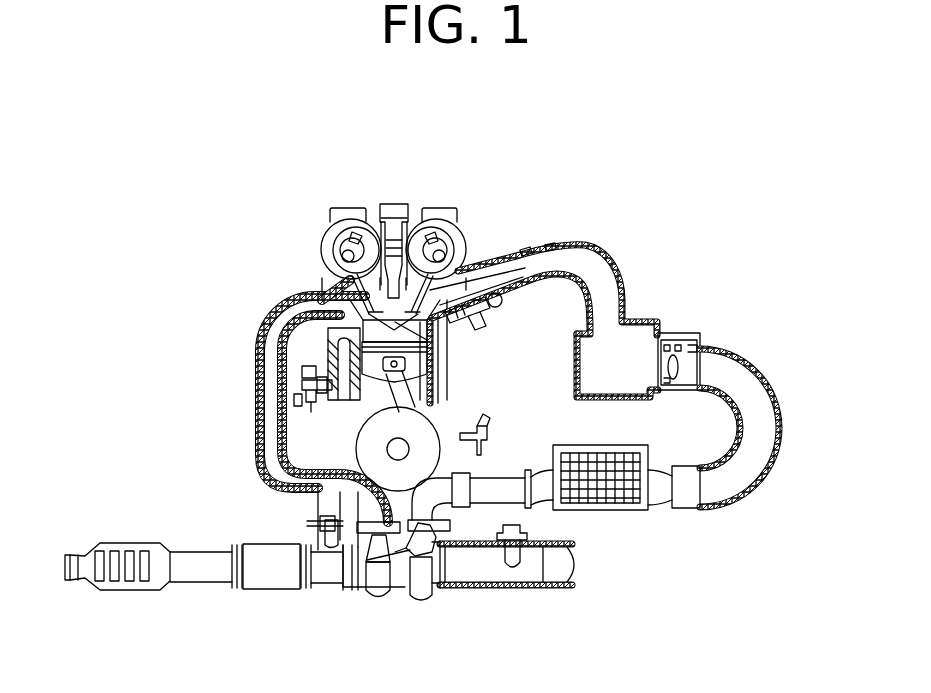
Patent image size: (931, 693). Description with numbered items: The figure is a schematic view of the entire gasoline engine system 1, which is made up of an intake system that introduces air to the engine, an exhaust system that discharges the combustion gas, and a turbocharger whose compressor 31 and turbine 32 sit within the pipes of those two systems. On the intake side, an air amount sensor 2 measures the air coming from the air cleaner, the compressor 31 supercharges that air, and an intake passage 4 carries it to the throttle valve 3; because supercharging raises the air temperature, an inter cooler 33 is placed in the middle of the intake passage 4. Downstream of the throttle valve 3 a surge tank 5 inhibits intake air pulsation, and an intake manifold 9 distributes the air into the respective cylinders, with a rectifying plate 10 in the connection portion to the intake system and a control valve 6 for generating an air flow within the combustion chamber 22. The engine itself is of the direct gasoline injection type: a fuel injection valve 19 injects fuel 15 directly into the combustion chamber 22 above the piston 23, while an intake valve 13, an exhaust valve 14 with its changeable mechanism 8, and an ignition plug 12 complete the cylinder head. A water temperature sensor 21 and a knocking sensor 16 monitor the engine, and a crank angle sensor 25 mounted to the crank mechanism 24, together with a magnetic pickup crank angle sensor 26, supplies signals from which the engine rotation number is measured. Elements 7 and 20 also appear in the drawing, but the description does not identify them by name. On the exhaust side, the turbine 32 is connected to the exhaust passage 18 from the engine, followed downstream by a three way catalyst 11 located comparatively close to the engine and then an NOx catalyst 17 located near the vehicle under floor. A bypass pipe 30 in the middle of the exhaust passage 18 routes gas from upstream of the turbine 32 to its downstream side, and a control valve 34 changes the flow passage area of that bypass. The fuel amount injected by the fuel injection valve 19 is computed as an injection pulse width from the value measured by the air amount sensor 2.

The gasoline engine system 1 is at (221, 212).
The air amount sensor 2 is at (507, 562).
The throttle valve 3 is at (700, 373).
The intake passage 4 is at (497, 495).
The surge tank 5 is at (633, 337).
The control valve 6 is at (550, 285).
The intake camshaft 7 is at (442, 245).
The changeable mechanism for the exhaust valve 8 is at (350, 230).
The intake manifold 9 is at (543, 270).
The rectifying plate 10 is at (497, 274).
The catalyst 11 is at (262, 580).
The ignition plug 12 is at (393, 210).
The intake valve 13 is at (449, 315).
The exhaust valve 14 is at (313, 285).
The fuel 15 is at (446, 335).
The knocking sensor 16 is at (290, 398).
The catalyst 17 is at (124, 578).
The exhaust passage 18 is at (290, 298).
The fuel injection valve 19 is at (486, 318).
The cylinder block 20 is at (348, 350).
The water temperature sensor 21 is at (318, 372).
The combustion chamber 22 is at (395, 322).
The piston 23 is at (455, 375).
The crank mechanism 24 is at (428, 405).
The crank angle sensor 25 is at (368, 448).
The crank angle sensor 26 is at (483, 438).
The pipe 30 is at (324, 535).
The compressor 31 is at (418, 595).
The turbine 32 is at (375, 593).
The inter cooler 33 is at (615, 495).
The control valve 34 is at (330, 517).